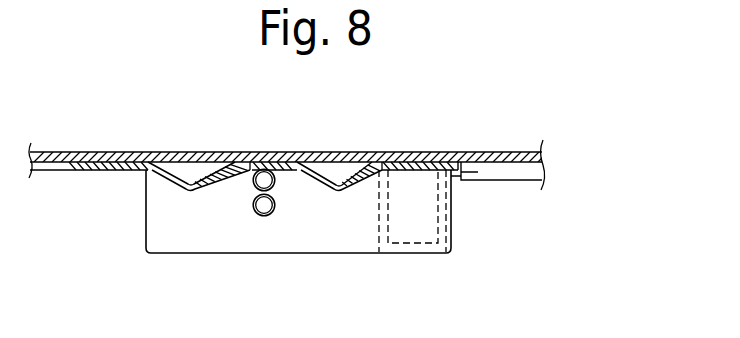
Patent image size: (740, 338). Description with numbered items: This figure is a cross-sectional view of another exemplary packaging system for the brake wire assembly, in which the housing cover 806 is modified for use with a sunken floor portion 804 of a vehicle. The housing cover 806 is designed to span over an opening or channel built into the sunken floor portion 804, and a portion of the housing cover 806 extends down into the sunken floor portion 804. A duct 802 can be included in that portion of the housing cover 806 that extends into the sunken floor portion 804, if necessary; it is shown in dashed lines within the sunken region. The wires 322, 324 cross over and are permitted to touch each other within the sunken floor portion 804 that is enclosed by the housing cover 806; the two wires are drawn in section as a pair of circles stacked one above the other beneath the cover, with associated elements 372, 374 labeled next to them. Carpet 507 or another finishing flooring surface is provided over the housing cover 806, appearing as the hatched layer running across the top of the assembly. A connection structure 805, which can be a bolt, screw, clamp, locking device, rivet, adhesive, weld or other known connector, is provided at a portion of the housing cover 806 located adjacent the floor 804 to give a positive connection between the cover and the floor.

The carpet 507 is at (522, 152).
The housing cover 806 is at (240, 165).
The connection structure 805 is at (478, 172).
The sunken floor portion 804 is at (268, 254).
The duct 802 is at (412, 244).
The wire 322 is at (254, 181).
The wire 324 is at (254, 205).
The first conductor sheath 372 is at (275, 181).
The second conductor sheath 374 is at (274, 208).